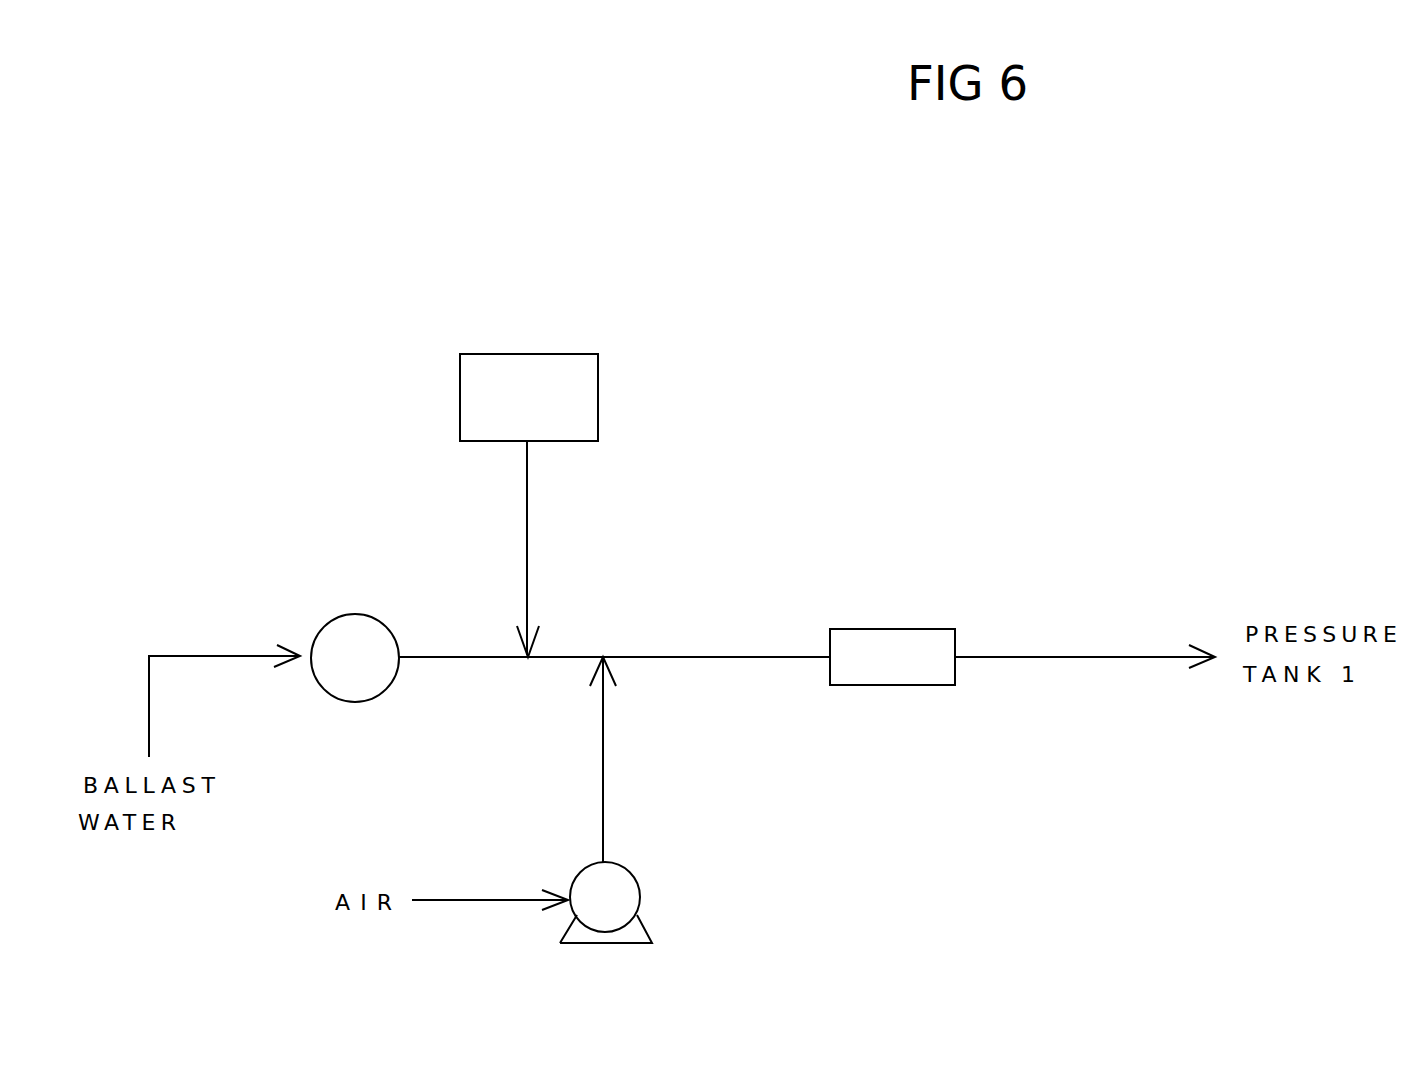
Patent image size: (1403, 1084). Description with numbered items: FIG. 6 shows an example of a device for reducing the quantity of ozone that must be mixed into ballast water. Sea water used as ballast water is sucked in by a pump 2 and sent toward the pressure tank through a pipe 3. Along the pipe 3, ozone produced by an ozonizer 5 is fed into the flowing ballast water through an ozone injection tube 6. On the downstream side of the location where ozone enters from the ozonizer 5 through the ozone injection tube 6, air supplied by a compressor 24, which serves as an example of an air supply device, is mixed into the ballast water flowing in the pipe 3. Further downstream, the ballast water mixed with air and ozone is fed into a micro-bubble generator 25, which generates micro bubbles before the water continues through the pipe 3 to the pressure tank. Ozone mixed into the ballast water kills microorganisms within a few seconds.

The pump 2 is at (357, 614).
The ozonizer 5 is at (598, 397).
The ozone injection tube 6 is at (527, 540).
The micro-bubble generator 25 is at (885, 629).
The pipe 3 is at (1022, 657).
The compressor 24 is at (640, 897).